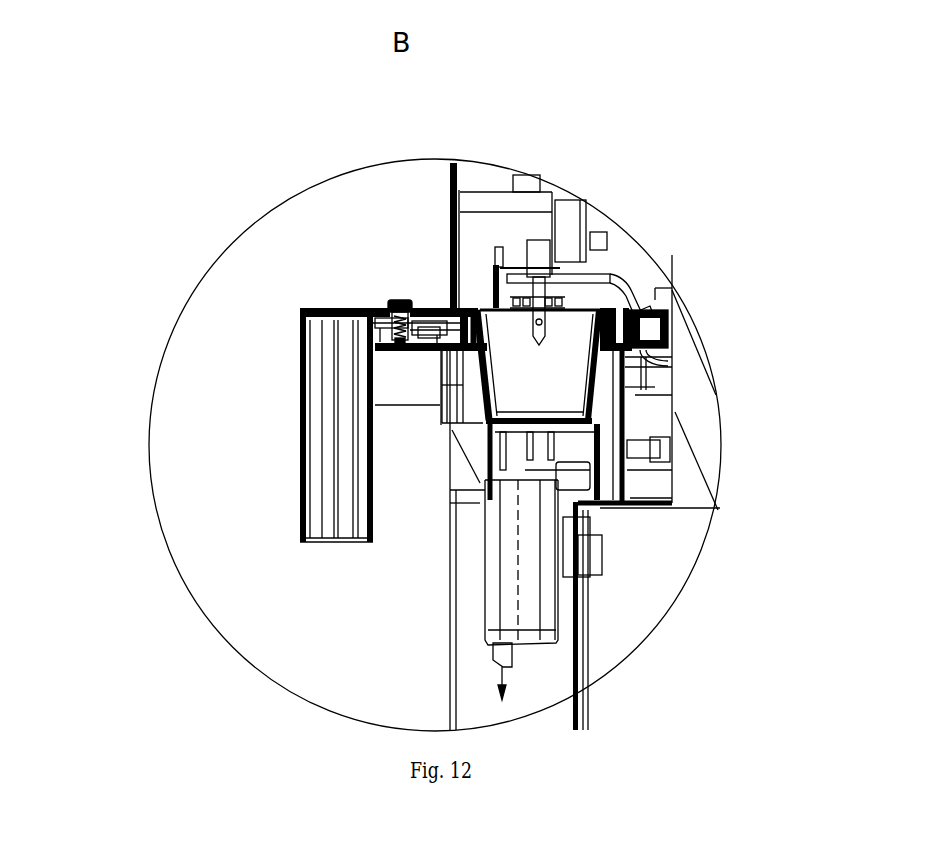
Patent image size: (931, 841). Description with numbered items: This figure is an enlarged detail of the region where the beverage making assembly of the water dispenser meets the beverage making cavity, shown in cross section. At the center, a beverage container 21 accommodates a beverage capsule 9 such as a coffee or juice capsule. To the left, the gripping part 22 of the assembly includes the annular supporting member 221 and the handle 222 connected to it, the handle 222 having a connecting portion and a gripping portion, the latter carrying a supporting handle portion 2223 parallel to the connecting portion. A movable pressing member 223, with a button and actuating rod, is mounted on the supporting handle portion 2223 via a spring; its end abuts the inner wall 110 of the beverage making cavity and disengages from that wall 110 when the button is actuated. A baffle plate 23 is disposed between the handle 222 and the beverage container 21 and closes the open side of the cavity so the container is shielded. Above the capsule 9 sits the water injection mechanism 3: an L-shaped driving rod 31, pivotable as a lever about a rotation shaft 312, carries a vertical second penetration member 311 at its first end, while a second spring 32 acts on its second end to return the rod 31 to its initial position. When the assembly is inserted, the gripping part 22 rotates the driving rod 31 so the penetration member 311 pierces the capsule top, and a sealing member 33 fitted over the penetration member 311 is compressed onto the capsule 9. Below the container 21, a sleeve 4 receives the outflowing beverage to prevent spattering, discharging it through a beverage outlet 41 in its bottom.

The gripping part 22 is at (238, 125).
The annular supporting member 221 is at (447, 302).
The handle 222 is at (298, 317).
The pressing member 223 is at (397, 303).
The supporting handle portion 2223 is at (403, 352).
The baffle plate 23 is at (366, 408).
The inner wall of the beverage making cavity 110 is at (459, 307).
The beverage capsule 9 is at (583, 380).
The beverage container 21 is at (598, 408).
The water injection mechanism 3 is at (803, 283).
The driving rod 31 is at (578, 280).
The second penetration member 311 is at (535, 296).
The rotation shaft 312 is at (624, 296).
The second spring 32 is at (668, 313).
The sealing member 33 is at (650, 310).
The sleeve 4 is at (598, 480).
The beverage outlet 41 is at (492, 652).